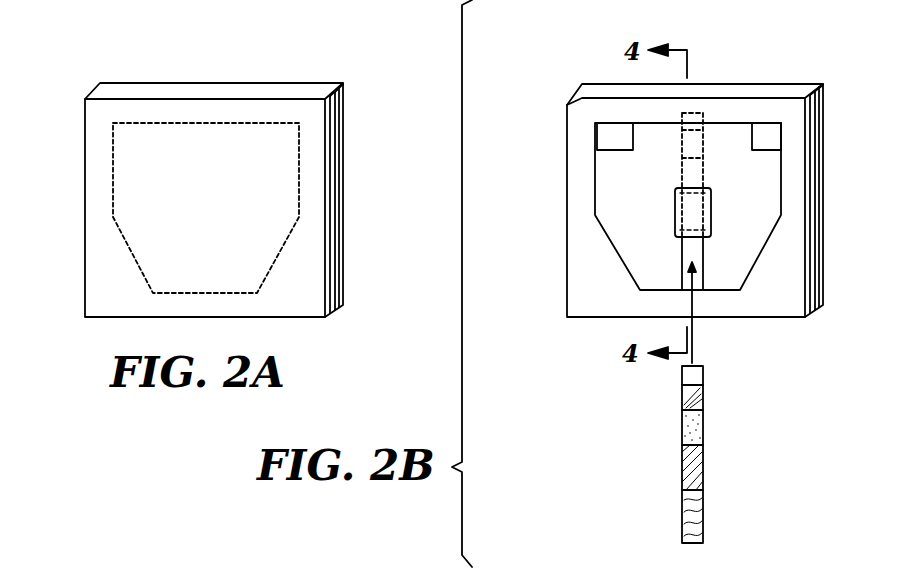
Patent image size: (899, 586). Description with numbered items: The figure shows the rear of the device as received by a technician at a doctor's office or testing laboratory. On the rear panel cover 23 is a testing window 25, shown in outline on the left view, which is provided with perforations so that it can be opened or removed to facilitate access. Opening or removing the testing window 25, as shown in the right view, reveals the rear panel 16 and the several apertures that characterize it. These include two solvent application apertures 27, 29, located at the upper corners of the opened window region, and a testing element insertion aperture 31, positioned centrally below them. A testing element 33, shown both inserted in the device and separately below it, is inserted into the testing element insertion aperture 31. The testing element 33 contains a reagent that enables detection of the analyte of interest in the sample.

In FIG. 2B, the rear panel 16 is at (630, 176).
In FIG. 2A, the rear panel cover 23 is at (100, 252).
In FIG. 2B, the rear panel cover 23 is at (590, 258).
In FIG. 2A, the testing window 25 is at (113, 163).
In FIG. 2B, the testing window 25 is at (595, 200).
In FIG. 2B, the solvent application aperture 27 is at (615, 135).
In FIG. 2B, the solvent application aperture 29 is at (768, 140).
In FIG. 2B, the testing element insertion aperture 31 is at (675, 213).
In FIG. 2B, the testing element 33 is at (706, 156).